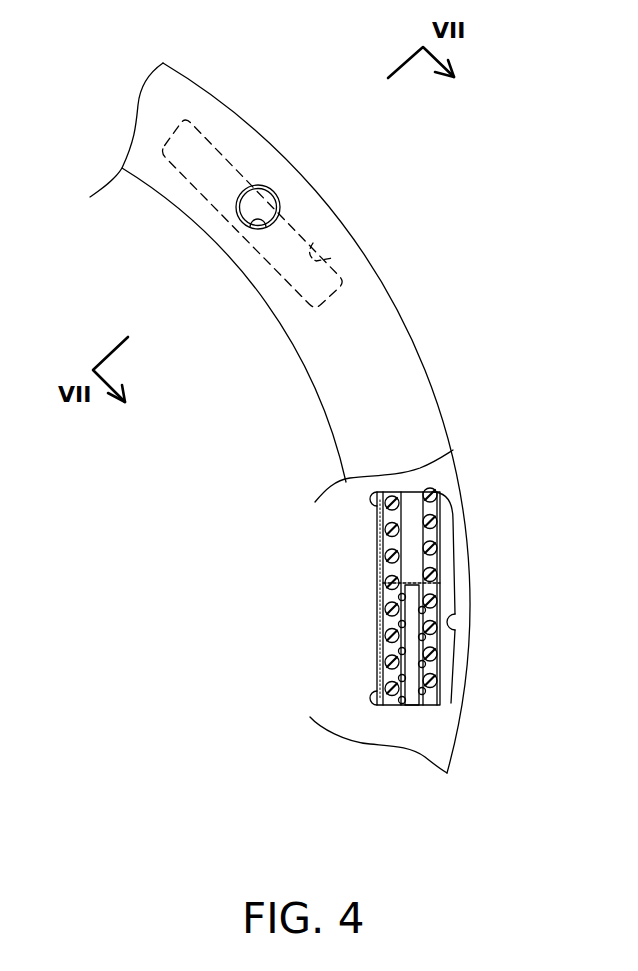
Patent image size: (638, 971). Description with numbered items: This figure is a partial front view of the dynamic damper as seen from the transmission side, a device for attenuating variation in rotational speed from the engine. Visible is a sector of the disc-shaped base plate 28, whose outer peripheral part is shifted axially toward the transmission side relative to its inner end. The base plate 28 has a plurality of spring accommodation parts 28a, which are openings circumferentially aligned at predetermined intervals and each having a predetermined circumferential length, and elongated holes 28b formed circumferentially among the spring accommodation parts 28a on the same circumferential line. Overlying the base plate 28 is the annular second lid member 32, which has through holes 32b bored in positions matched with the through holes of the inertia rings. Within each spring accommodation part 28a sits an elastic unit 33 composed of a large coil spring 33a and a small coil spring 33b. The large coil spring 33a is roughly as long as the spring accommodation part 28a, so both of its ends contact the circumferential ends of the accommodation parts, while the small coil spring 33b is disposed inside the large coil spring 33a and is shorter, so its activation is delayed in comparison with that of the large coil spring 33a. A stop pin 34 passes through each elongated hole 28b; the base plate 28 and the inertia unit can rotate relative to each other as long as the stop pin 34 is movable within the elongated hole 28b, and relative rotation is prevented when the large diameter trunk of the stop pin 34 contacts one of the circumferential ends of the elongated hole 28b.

The base plate 28 is at (120, 193).
The spring accommodation part 28a is at (450, 632).
The elongated hole 28b is at (332, 258).
The second lid member 32 is at (405, 360).
The through hole 32b is at (248, 227).
The elastic unit 33 is at (446, 547).
The large coil spring 33a is at (425, 516).
The small coil spring 33b is at (420, 585).
The stop pin 34 is at (265, 200).